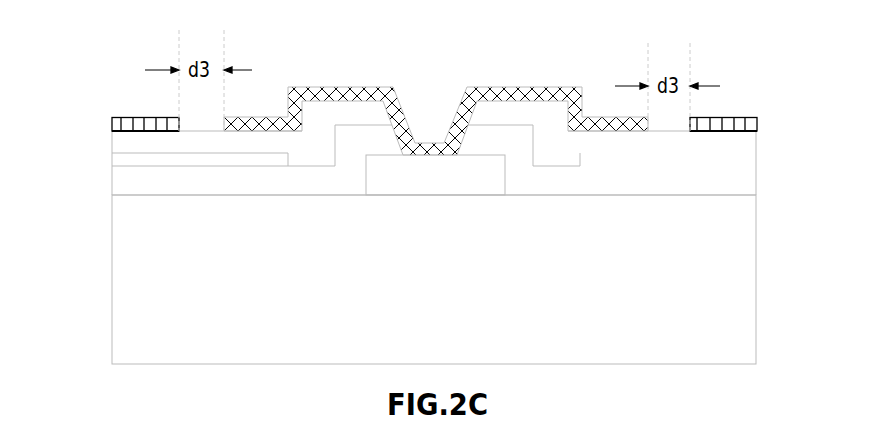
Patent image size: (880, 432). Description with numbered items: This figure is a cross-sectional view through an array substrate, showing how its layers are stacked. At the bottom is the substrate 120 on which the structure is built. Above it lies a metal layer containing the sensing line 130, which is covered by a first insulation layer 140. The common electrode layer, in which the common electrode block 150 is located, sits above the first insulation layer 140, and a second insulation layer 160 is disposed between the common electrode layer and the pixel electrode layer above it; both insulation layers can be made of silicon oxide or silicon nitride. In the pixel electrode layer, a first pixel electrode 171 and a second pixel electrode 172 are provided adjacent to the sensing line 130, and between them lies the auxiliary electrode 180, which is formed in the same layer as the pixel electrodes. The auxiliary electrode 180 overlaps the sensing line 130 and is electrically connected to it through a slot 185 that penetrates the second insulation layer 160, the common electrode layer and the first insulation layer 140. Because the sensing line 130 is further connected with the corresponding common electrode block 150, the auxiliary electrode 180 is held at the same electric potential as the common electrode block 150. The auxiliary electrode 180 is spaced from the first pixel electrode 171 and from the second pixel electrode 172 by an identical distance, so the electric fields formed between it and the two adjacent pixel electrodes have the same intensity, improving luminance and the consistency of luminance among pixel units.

The substrate 120 is at (695, 320).
The sensing line 130 is at (433, 175).
The first insulation layer 140 is at (747, 184).
The common electrode block 150 is at (160, 160).
The second insulation layer 160 is at (742, 150).
The first pixel electrode 171 is at (155, 128).
The second pixel electrode 172 is at (725, 117).
The auxiliary electrode 180 is at (388, 87).
The slot 185 is at (428, 128).